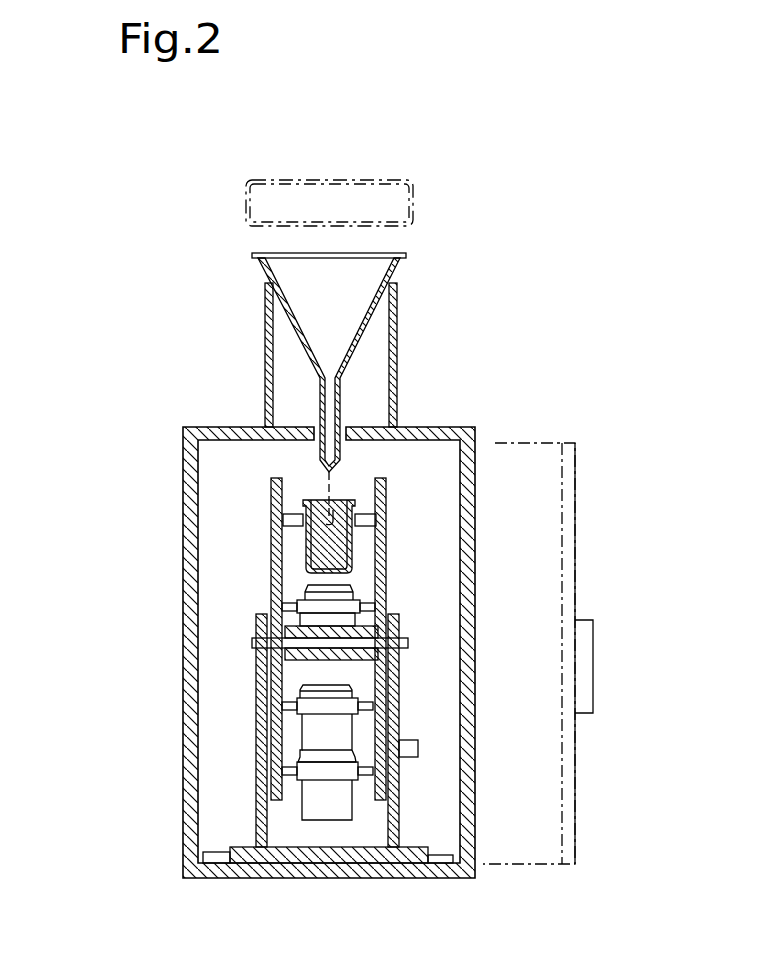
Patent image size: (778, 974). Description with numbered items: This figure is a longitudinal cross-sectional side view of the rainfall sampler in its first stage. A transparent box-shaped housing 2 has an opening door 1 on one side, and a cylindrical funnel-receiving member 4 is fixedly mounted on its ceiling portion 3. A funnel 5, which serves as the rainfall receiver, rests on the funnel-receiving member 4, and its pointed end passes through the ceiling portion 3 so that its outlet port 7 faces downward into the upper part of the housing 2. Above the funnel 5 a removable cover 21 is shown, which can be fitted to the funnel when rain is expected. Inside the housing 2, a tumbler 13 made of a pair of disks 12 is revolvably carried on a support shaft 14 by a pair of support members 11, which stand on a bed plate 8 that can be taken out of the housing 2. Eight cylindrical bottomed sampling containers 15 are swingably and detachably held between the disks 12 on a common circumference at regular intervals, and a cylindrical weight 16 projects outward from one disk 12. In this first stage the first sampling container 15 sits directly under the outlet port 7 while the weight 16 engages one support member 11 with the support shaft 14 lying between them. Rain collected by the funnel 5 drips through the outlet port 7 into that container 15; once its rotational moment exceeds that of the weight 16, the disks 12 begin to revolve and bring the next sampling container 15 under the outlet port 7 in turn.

The opening door 1 is at (577, 553).
The housing 2 is at (478, 411).
The ceiling portion 3 is at (224, 427).
The cylindrical funnel-receiving member 4 is at (398, 325).
The funnel 5 is at (357, 267).
The outlet port 7 is at (347, 489).
The bed plate 8 is at (350, 848).
The support members 11 is at (257, 812).
The disks 12 is at (272, 493).
The tumbler 13 is at (327, 730).
The support shaft 14 is at (408, 643).
The sampling containers 15 is at (358, 560).
The weight 16 is at (418, 740).
The removable cover 21 is at (337, 180).